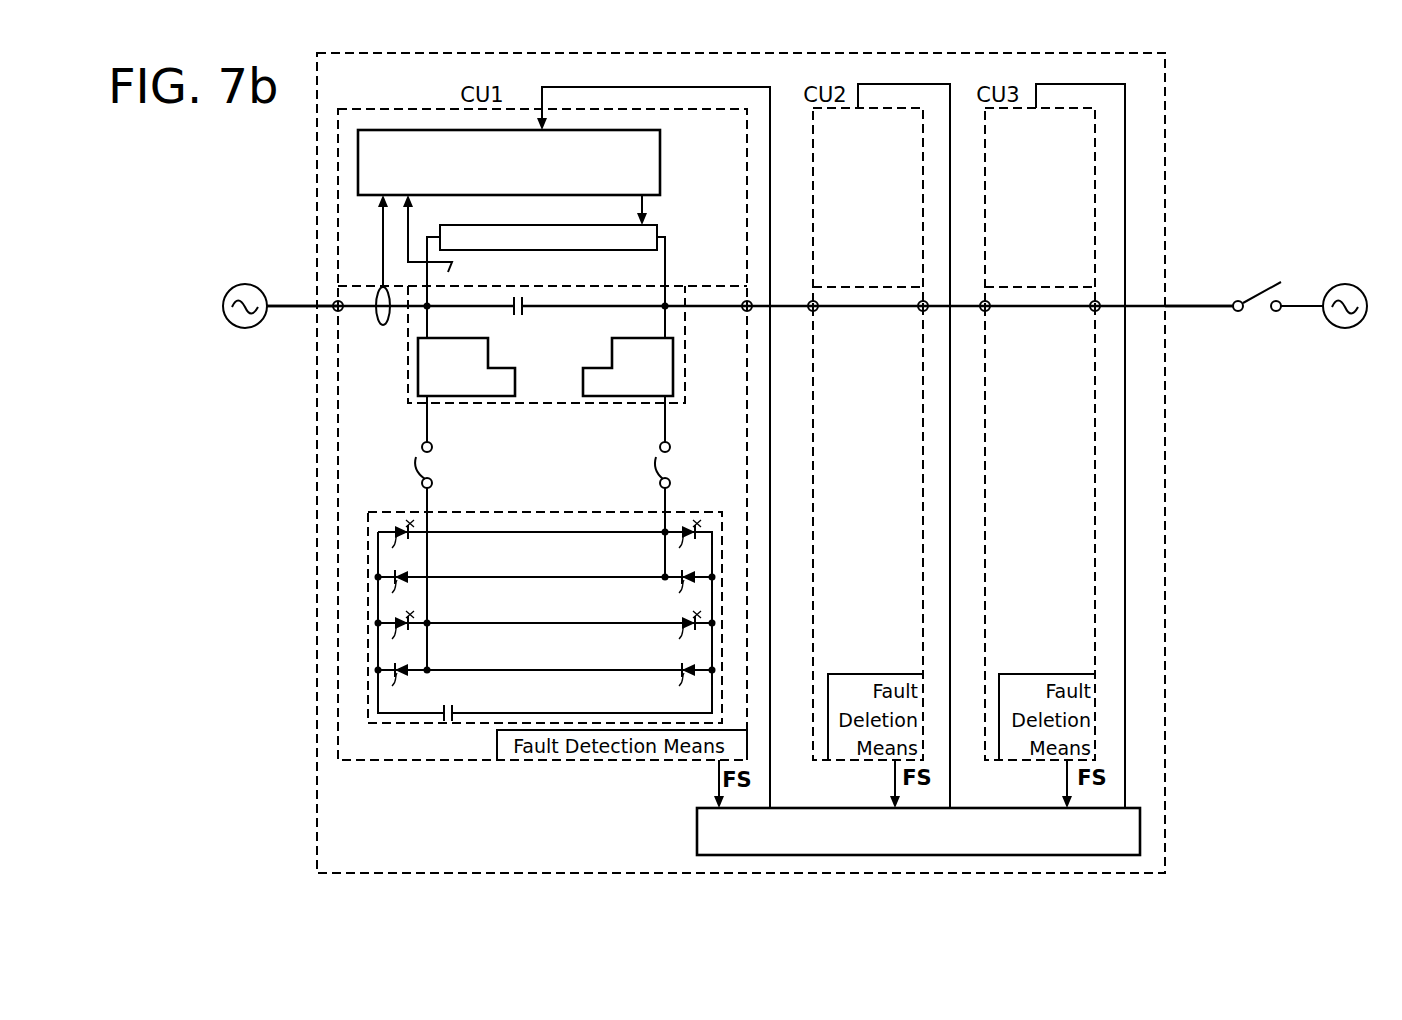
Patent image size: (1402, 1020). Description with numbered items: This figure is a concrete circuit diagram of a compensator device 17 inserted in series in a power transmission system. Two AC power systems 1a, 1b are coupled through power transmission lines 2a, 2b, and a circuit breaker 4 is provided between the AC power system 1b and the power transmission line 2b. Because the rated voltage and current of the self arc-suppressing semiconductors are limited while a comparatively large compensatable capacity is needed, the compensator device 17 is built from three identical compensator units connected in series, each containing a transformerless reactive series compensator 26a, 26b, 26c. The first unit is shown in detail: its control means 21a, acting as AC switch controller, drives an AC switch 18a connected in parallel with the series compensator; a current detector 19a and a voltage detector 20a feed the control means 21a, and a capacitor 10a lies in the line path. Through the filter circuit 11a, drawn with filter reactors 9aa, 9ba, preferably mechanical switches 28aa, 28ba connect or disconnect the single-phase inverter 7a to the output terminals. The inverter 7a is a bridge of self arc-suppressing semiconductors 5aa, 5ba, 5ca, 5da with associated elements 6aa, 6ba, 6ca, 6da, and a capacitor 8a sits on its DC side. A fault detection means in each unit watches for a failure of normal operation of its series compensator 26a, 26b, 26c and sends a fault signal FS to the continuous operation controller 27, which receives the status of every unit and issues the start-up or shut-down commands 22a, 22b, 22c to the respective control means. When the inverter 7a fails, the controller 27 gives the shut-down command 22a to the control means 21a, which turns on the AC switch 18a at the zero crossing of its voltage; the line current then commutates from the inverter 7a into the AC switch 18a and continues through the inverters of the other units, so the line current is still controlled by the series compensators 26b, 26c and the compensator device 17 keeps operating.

The AC power system 1a is at (246, 284).
The AC power system 1b is at (1343, 284).
The power transmission line 2a is at (283, 310).
The power transmission line 2b is at (1208, 310).
The circuit breaker 4 is at (1257, 296).
The compensator device 17 is at (1165, 832).
The series compensator 26a is at (338, 752).
The series compensator 26b is at (813, 745).
The series compensator 26c is at (985, 745).
The control means 21a is at (660, 132).
The command signal 22a is at (653, 434).
The command signal 22b is at (903, 434).
The command signal 22c is at (1080, 434).
The AC switch 18a is at (657, 228).
The switch state signal line 20a is at (452, 274).
The current detector 19a is at (379, 320).
The capacitor 10a is at (518, 316).
The filter circuit 11a is at (686, 340).
The filter reactor 9aa is at (418, 378).
The filter reactor 9ba is at (673, 385).
The switch 28aa is at (417, 462).
The switch 28ba is at (670, 462).
The single-phase inverter 7a is at (705, 512).
The thyristor 5aa is at (402, 546).
The thyristor 5ba is at (688, 546).
The thyristor 5ca is at (403, 638).
The thyristor 5da is at (688, 638).
The thyristor 6aa is at (402, 594).
The thyristor 6ba is at (688, 594).
The thyristor 6ca is at (403, 685).
The thyristor 6da is at (688, 685).
The DC capacitor 8a is at (440, 722).
The continuous operation controller 27 is at (697, 832).